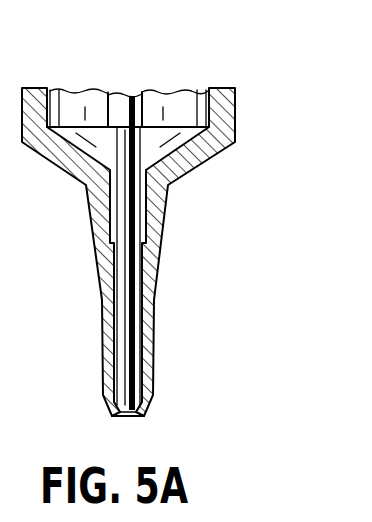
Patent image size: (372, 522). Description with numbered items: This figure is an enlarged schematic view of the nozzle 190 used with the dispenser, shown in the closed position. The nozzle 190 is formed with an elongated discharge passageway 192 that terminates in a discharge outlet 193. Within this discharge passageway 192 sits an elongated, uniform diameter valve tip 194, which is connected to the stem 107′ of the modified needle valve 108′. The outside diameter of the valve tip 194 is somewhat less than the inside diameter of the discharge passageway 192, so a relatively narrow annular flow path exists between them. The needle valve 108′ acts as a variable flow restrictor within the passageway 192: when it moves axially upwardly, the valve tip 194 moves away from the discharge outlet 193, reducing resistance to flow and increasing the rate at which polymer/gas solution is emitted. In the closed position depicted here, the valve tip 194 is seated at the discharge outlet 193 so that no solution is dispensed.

The nozzle 190 is at (234, 220).
The stem 107′ is at (136, 96).
The valve tip 194 is at (125, 299).
The discharge passageway 192 is at (150, 313).
The needle valve 108′ is at (148, 378).
The discharge outlet 193 is at (122, 418).